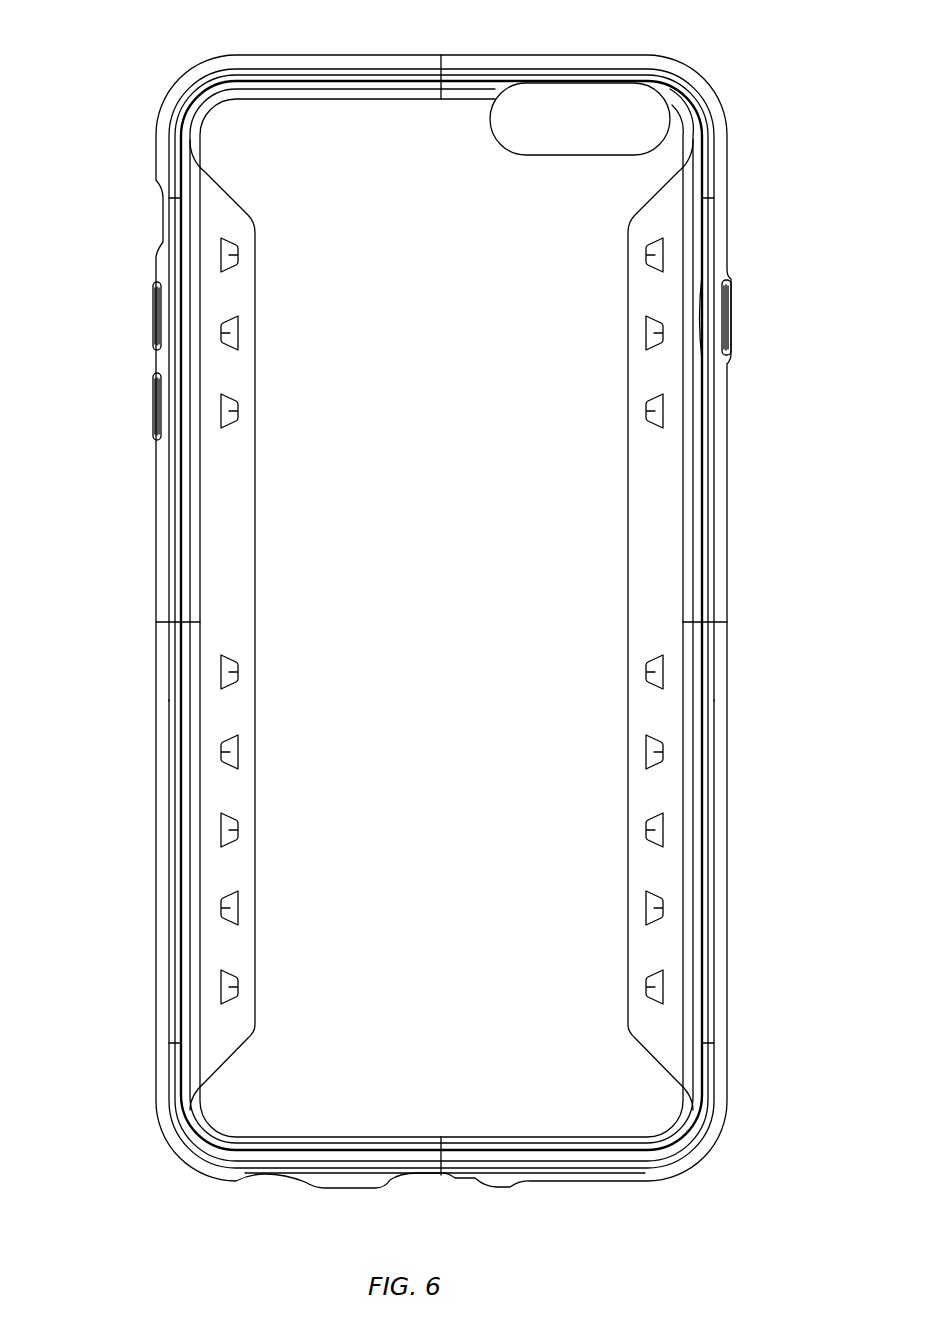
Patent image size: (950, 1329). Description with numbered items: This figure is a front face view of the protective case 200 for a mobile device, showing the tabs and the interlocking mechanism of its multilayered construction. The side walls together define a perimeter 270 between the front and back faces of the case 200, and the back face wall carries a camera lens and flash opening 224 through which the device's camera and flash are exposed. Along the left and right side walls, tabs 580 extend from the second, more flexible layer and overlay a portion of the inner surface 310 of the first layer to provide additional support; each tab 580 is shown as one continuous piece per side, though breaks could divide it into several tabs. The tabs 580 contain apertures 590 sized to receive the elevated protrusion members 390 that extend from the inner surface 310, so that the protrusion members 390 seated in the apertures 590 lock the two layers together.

The protective case 200 is at (463, 634).
The camera lens and flash opening 224 is at (583, 108).
The perimeter 270 is at (702, 82).
The inner surface of the first layer 310 is at (273, 158).
The elevated protrusion members 390 is at (85, 326).
The tabs 580 is at (220, 540).
The apertures 590 is at (442, 557).